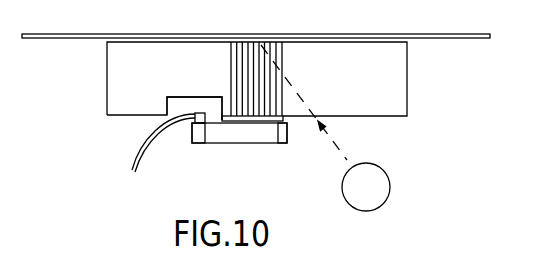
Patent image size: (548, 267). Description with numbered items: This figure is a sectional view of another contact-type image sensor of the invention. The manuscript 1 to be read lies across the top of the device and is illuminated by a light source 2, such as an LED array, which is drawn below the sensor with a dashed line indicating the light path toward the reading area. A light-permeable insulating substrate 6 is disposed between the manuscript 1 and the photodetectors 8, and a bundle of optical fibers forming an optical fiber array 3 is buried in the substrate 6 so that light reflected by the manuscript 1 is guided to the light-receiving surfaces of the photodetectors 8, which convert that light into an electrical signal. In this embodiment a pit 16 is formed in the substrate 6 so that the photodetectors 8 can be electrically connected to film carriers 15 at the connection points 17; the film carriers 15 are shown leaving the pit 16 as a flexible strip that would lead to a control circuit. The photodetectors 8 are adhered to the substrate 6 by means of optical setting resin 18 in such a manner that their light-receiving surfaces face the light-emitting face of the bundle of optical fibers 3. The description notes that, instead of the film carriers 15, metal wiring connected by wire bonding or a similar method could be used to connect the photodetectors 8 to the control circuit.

The manuscript 1 is at (494, 33).
The light source 2 is at (386, 187).
The optical fiber array 3 is at (233, 65).
The light-permeable insulating substrate 6 is at (400, 108).
The photodetectors 8 is at (242, 143).
The film carriers 15 is at (158, 138).
The pit 16 is at (173, 107).
The connection points 17 is at (202, 143).
The optical setting resin 18 is at (282, 143).